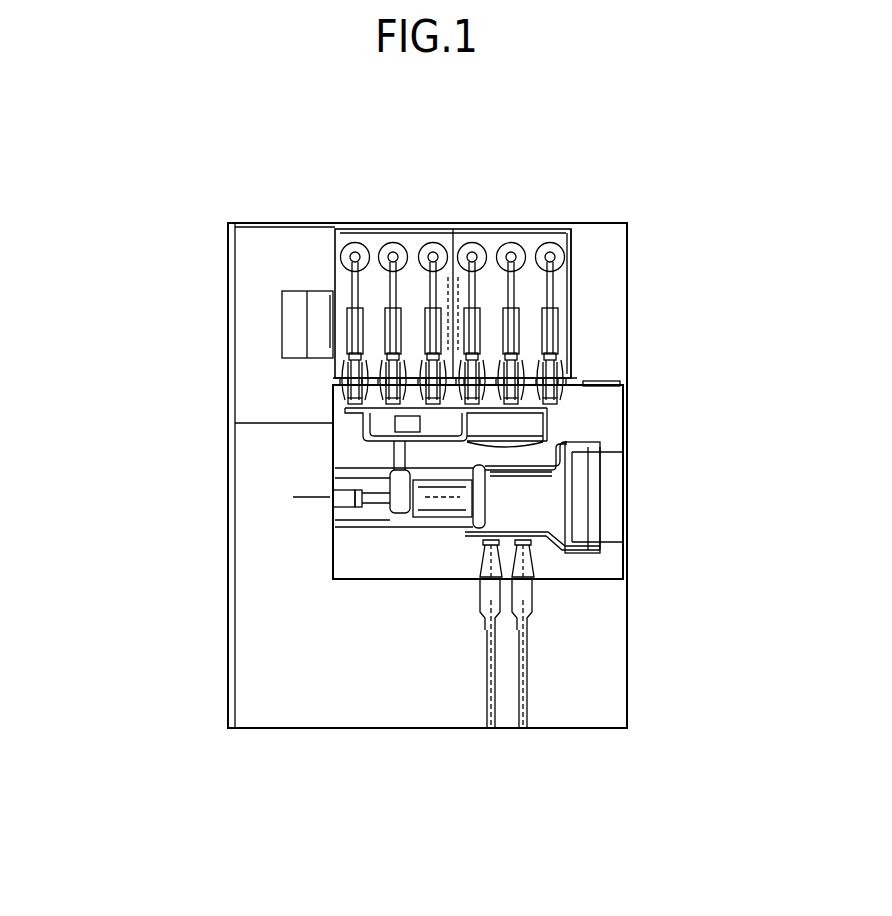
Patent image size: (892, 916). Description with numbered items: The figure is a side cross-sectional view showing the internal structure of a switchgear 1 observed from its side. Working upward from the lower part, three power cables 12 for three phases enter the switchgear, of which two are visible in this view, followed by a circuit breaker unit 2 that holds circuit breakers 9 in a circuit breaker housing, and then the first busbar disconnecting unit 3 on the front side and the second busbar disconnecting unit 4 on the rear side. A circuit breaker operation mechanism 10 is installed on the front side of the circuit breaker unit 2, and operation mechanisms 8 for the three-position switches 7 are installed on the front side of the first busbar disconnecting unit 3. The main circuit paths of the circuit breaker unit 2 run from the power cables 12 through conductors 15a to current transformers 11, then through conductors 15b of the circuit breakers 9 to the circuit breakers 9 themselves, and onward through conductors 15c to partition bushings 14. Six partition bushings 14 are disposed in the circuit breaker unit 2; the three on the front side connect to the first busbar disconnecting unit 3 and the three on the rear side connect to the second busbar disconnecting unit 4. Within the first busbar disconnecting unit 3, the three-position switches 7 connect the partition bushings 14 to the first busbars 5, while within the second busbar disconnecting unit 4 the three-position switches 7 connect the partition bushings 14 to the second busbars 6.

The switchgear 1 is at (233, 245).
The circuit breaker unit 2 is at (627, 385).
The first busbar disconnecting unit 3 is at (346, 229).
The second busbar disconnecting unit 4 is at (572, 262).
The first busbars 5 is at (435, 243).
The second busbars 6 is at (557, 244).
The three-position switches 7 is at (385, 308).
The operation mechanisms 8 is at (282, 315).
The circuit breakers 9 is at (430, 500).
The circuit breaker operation mechanism 10 is at (275, 487).
The current transformers 11 is at (610, 484).
The power cables 12 is at (490, 702).
The partition bushings 14 is at (345, 400).
The conductors 15a is at (577, 553).
The conductors 15b is at (547, 465).
The conductors 15c is at (520, 440).